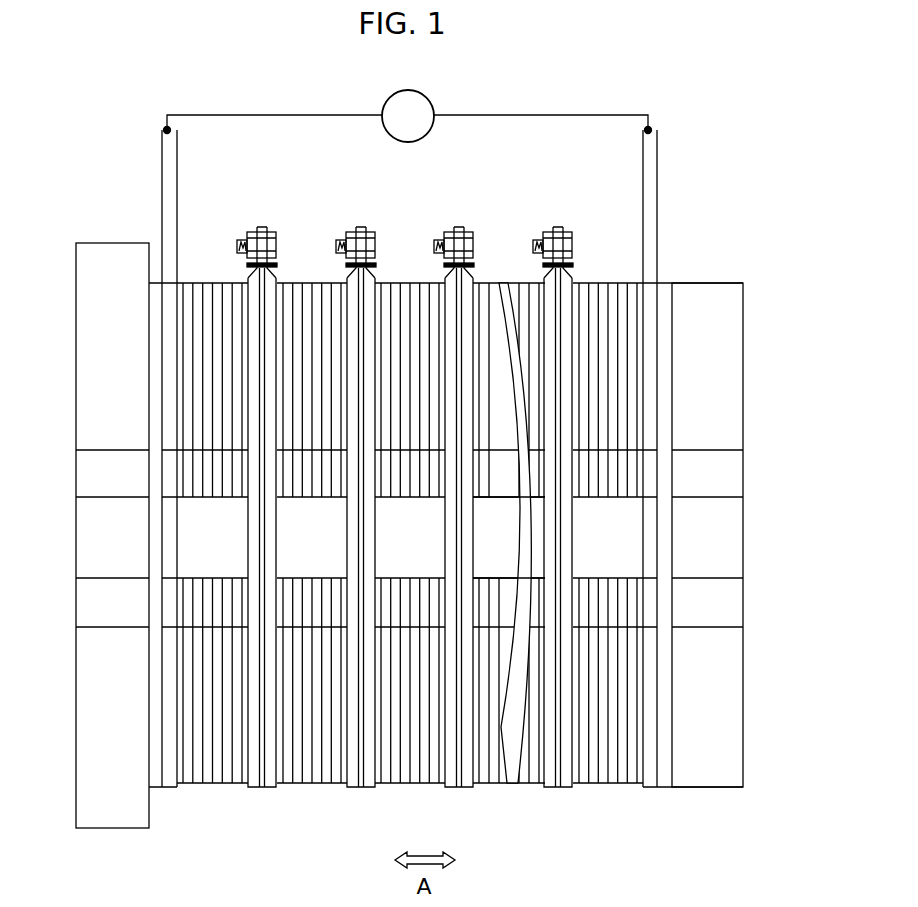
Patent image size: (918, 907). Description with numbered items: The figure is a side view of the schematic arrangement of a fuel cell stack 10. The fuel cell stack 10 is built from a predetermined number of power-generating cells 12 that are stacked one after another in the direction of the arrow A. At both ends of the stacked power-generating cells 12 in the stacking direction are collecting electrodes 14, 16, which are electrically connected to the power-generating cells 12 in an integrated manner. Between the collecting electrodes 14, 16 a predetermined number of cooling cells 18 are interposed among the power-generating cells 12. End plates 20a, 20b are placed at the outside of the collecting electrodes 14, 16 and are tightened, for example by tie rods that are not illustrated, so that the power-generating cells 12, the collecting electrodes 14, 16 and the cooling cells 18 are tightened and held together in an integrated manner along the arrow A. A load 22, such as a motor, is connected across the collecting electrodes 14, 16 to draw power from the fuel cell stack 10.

The fuel cell stack 10 is at (564, 171).
The power-generating cell 12 is at (215, 786).
The collecting electrode 14 is at (177, 196).
The collecting electrode 16 is at (657, 196).
The cooling cell 18 is at (269, 220).
The end plate 20a is at (115, 252).
The end plate 20b is at (727, 340).
The load 22 is at (408, 90).